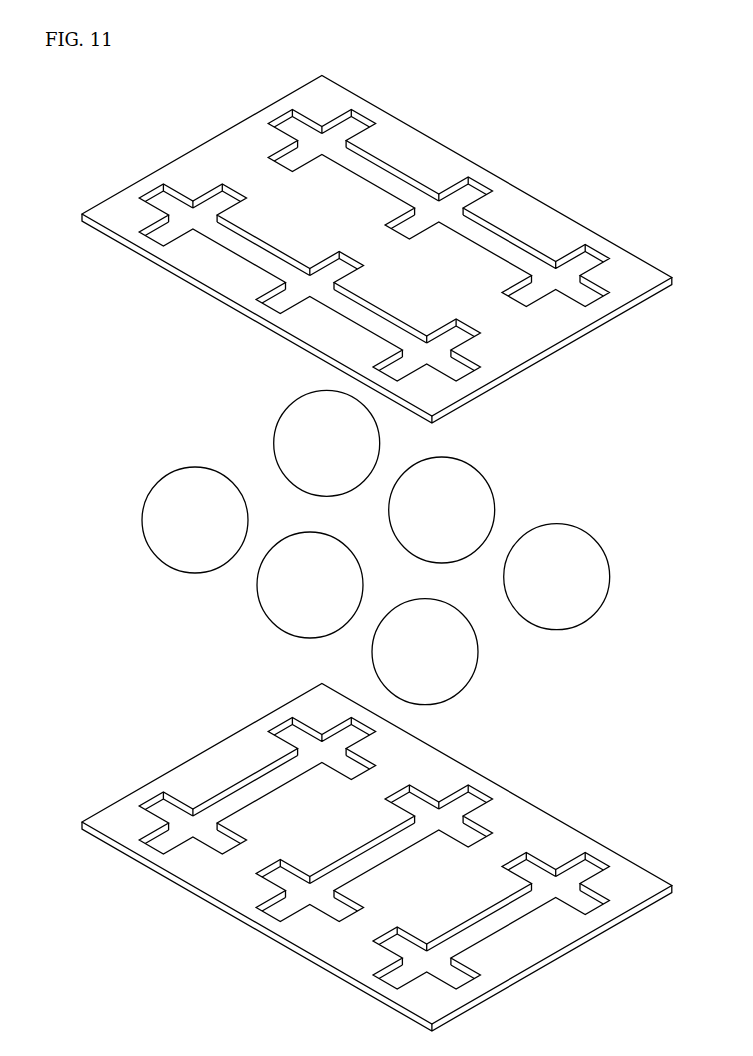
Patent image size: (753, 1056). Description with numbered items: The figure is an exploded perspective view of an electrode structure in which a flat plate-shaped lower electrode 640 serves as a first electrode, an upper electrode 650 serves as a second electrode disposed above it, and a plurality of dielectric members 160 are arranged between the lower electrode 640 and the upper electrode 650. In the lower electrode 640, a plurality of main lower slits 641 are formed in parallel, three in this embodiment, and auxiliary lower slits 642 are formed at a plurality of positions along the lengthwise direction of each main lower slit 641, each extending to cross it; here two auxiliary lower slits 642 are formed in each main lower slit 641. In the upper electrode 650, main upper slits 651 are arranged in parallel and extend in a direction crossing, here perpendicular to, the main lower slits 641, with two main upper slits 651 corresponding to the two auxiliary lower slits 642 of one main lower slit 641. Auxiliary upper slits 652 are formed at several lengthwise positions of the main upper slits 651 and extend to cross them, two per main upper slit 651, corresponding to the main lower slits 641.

The dielectric member 160 is at (575, 537).
The lower electrode 640 is at (377, 855).
The main lower slit 641 is at (250, 792).
The auxiliary lower slit 642 is at (170, 807).
The upper electrode 650 is at (360, 240).
The main upper slit 651 is at (394, 183).
The auxiliary upper slit 652 is at (366, 124).